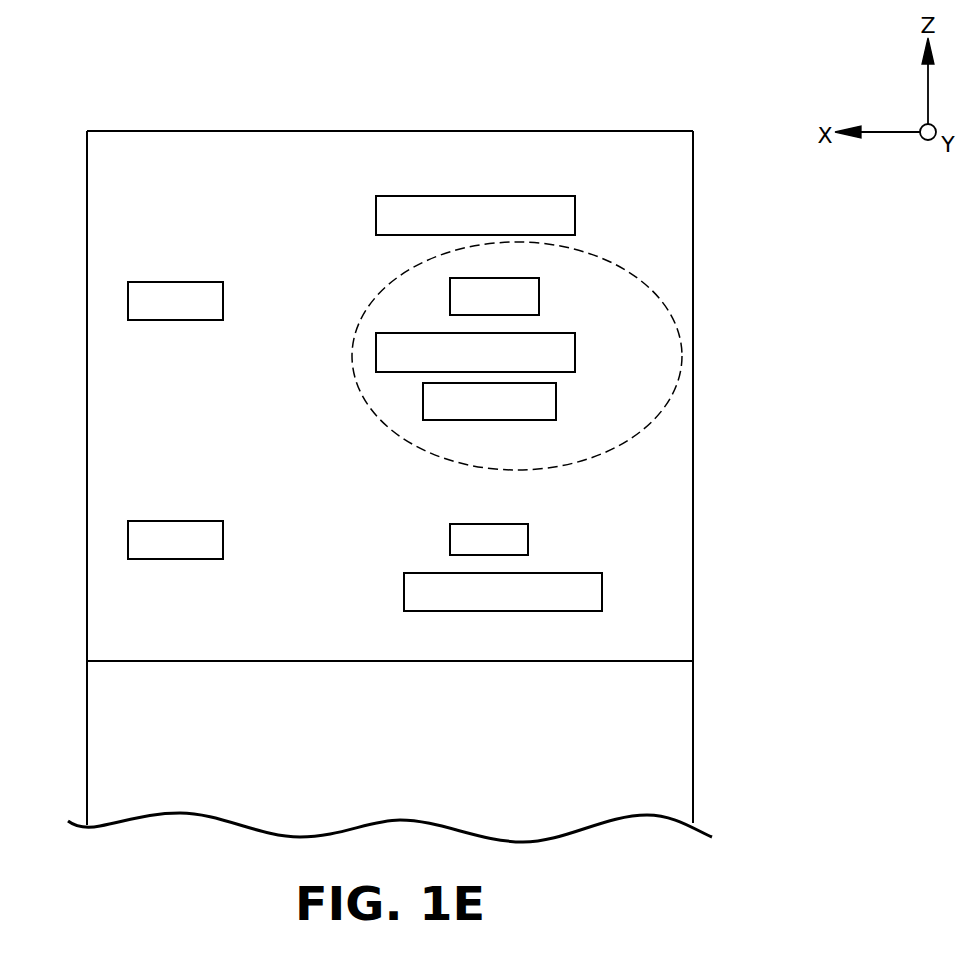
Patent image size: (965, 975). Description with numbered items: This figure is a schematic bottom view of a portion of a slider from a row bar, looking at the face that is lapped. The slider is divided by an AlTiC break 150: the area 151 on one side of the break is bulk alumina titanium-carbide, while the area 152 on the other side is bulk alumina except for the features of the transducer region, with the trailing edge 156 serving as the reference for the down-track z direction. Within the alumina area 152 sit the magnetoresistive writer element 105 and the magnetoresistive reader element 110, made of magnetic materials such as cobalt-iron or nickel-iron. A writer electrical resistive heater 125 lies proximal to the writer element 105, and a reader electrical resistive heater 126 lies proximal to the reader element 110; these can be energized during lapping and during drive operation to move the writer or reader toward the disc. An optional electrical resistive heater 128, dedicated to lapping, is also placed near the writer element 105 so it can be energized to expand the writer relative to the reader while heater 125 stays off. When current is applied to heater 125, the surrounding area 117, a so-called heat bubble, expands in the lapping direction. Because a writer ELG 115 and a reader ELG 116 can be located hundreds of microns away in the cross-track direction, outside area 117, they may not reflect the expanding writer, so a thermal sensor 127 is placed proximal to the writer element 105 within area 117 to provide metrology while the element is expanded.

The magnetoresistive writer element 105 is at (539, 295).
The magnetoresistive reader element 110 is at (528, 537).
The writer ELG 115 is at (177, 282).
The reader ELG 116 is at (177, 521).
The area 117 is at (352, 355).
The writer electrical resistive heater 125 is at (575, 348).
The reader electrical resistive heater 126 is at (602, 592).
The thermal sensor 127 is at (556, 400).
The optional electrical resistive heater 128 is at (575, 212).
The AlTiC break 150 is at (547, 661).
The area 151 is at (405, 750).
The area 152 is at (367, 498).
The trailing edge 156 is at (565, 131).